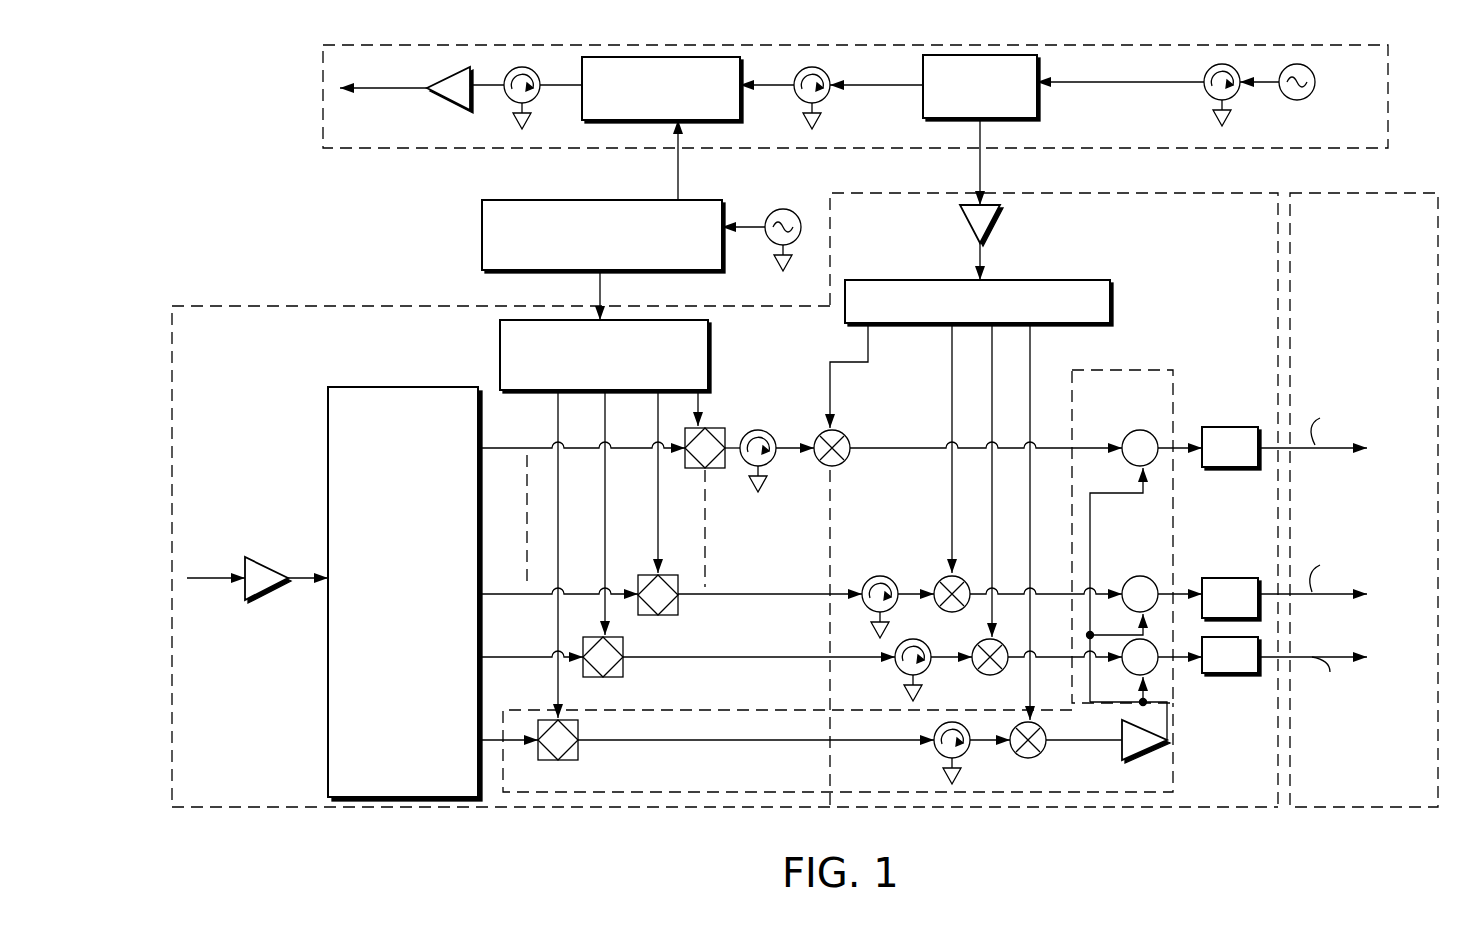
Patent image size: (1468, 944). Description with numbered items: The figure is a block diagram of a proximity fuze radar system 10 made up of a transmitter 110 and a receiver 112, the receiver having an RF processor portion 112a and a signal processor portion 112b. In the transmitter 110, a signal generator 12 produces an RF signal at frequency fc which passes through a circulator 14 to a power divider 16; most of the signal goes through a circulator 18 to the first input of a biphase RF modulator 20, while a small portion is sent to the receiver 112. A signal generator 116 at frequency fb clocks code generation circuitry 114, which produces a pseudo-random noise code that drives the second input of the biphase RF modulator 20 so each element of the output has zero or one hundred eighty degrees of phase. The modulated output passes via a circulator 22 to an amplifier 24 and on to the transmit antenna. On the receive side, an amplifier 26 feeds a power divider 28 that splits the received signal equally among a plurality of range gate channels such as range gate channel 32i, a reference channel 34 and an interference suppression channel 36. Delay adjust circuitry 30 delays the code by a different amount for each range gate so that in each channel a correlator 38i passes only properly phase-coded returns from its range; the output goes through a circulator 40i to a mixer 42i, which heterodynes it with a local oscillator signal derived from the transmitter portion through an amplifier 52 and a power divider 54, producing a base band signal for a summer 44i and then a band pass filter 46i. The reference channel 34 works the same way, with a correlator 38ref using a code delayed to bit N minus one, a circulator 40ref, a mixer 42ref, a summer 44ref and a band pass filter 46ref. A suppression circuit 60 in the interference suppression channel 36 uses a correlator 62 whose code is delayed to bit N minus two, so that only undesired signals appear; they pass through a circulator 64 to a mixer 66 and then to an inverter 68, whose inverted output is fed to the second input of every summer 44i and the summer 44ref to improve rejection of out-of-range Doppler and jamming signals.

The proximity fuze radar system 10 is at (280, 262).
The signal generator 12 is at (1296, 103).
The circulator 14 is at (1205, 96).
The power divider 16 is at (1040, 108).
The circulator 18 is at (834, 100).
The biphase RF modulator 20 is at (735, 118).
The circulator 22 is at (534, 105).
The amplifier 24 is at (432, 75).
The amplifier 26 is at (265, 558).
The power divider 28 is at (405, 386).
The delay adjust circuitry 30 is at (500, 355).
The range gate channel 32i is at (495, 582).
The reference channel 34 is at (490, 652).
The interference suppression channel 36 is at (487, 735).
The correlator 38i is at (665, 616).
The correlator 38ref is at (610, 678).
The circulator 40i is at (806, 607).
The circulator 40ref is at (898, 670).
The mixer 42i is at (1028, 594).
The mixer 42ref is at (992, 677).
The summer 44i is at (1143, 575).
The summer 44ref is at (1148, 678).
The band pass filter 46i is at (1228, 578).
The band pass filter 46ref is at (1256, 676).
The amplifier 52 is at (990, 226).
The power divider 54 is at (1050, 280).
The suppression circuit 60 is at (931, 788).
The correlation detection circuit 62 is at (580, 758).
The circulator 64 is at (965, 752).
The mixer 66 is at (1042, 756).
The inverter 68 is at (1130, 760).
The transmitter 110 is at (318, 120).
The receiver 112 is at (402, 304).
The RF processor portion 112a is at (1232, 235).
The signal processor portion 112b is at (1375, 231).
The code generation circuitry 114 is at (488, 205).
The signal generator 116 is at (787, 207).